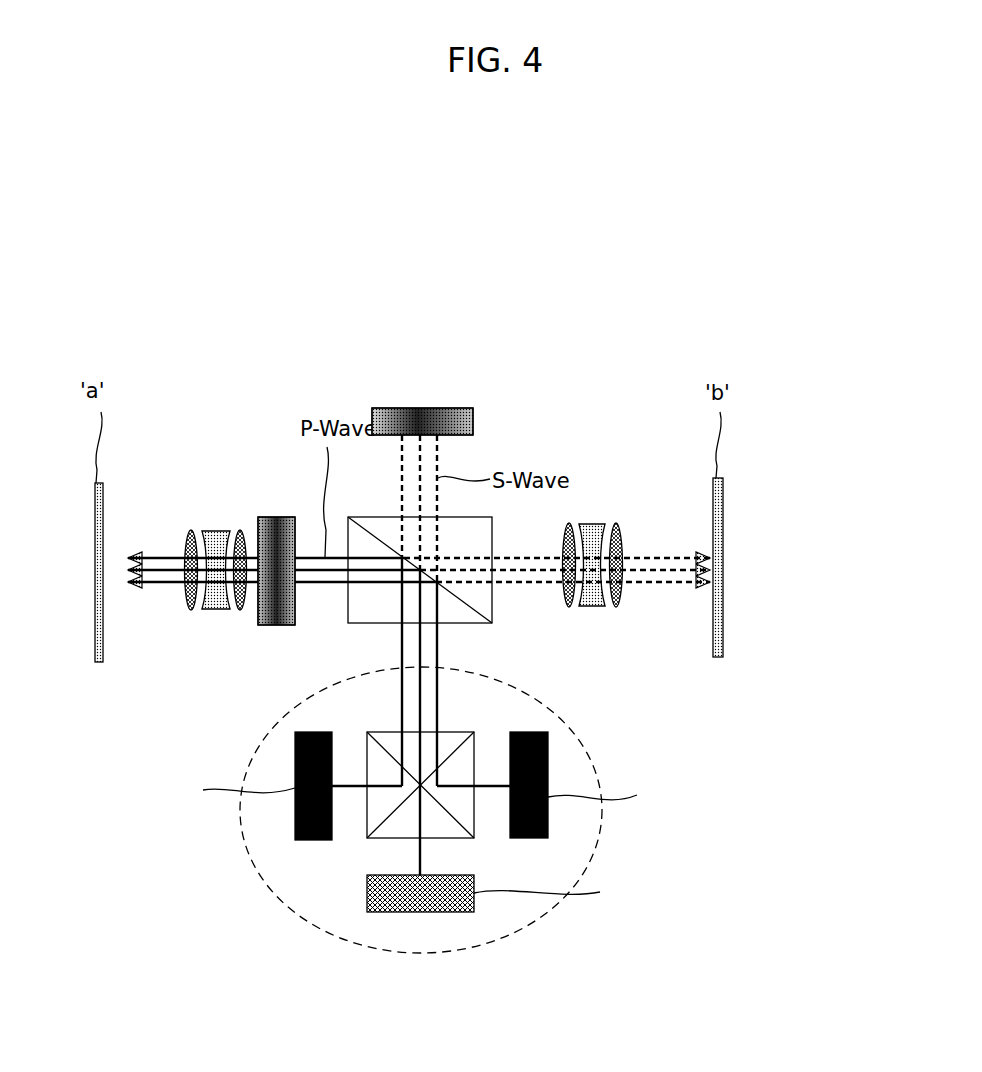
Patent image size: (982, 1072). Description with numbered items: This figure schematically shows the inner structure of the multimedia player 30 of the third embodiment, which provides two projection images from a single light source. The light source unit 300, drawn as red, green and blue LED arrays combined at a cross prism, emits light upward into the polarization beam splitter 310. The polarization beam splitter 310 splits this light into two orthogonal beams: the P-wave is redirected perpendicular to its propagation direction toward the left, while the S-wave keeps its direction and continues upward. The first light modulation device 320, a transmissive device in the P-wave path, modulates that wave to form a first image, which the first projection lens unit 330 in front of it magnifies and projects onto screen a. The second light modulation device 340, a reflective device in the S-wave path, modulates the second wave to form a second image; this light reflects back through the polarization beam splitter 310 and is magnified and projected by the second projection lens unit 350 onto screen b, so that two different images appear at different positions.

The multimedia player 30 is at (410, 228).
The light source unit 300 is at (565, 718).
The polarization beam splitter 310 is at (478, 623).
The first light modulation device 320 is at (276, 517).
The first projection lens unit 330 is at (211, 531).
The second light modulation device 340 is at (409, 408).
The second projection lens unit 350 is at (592, 524).